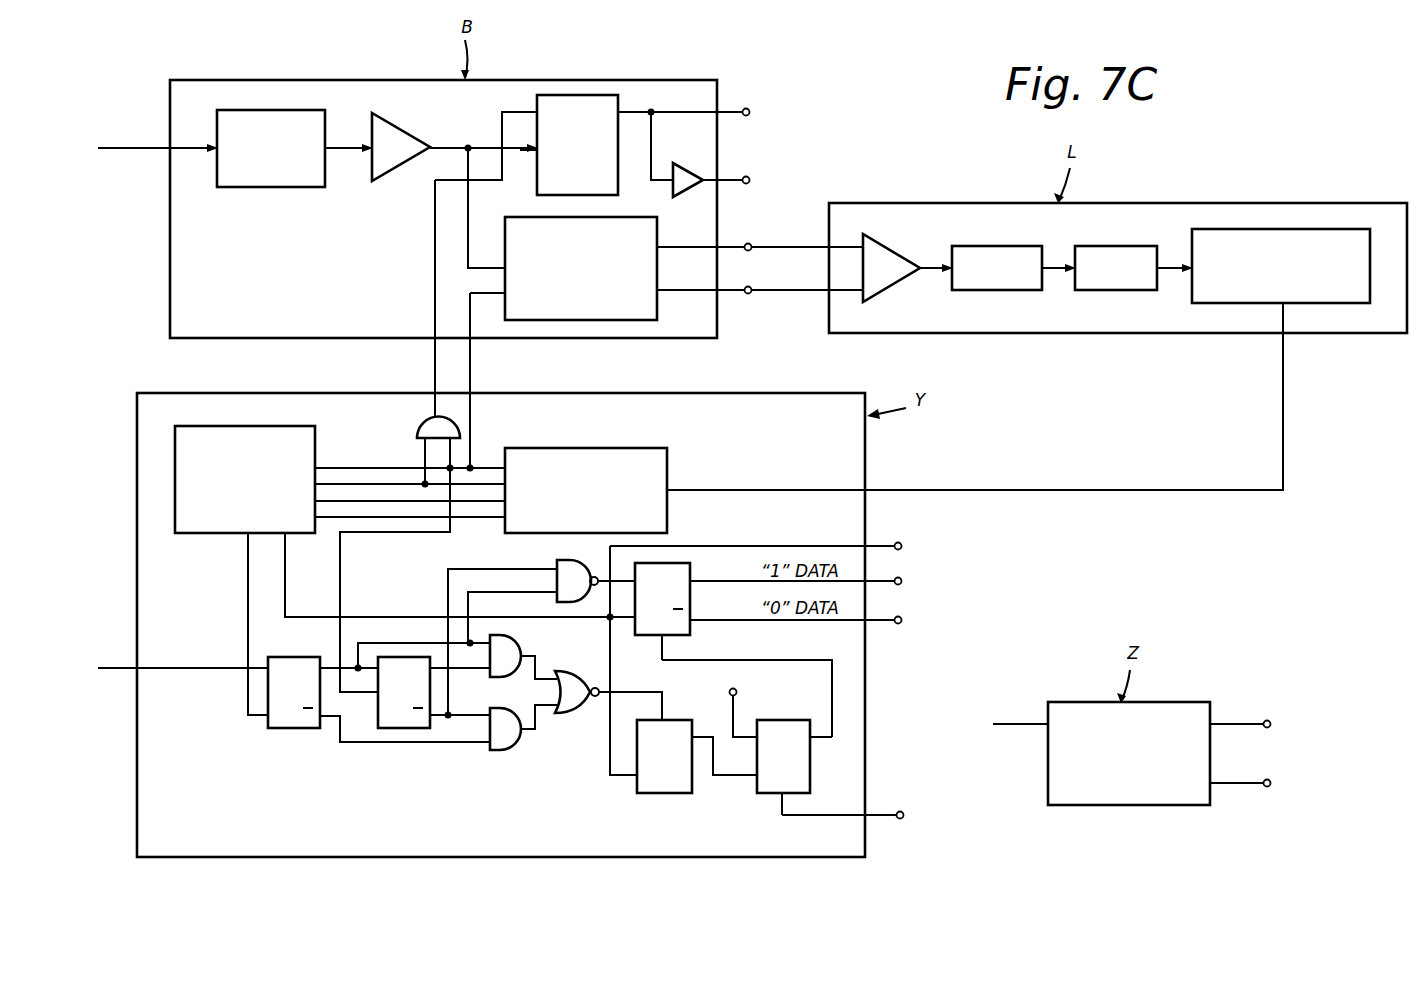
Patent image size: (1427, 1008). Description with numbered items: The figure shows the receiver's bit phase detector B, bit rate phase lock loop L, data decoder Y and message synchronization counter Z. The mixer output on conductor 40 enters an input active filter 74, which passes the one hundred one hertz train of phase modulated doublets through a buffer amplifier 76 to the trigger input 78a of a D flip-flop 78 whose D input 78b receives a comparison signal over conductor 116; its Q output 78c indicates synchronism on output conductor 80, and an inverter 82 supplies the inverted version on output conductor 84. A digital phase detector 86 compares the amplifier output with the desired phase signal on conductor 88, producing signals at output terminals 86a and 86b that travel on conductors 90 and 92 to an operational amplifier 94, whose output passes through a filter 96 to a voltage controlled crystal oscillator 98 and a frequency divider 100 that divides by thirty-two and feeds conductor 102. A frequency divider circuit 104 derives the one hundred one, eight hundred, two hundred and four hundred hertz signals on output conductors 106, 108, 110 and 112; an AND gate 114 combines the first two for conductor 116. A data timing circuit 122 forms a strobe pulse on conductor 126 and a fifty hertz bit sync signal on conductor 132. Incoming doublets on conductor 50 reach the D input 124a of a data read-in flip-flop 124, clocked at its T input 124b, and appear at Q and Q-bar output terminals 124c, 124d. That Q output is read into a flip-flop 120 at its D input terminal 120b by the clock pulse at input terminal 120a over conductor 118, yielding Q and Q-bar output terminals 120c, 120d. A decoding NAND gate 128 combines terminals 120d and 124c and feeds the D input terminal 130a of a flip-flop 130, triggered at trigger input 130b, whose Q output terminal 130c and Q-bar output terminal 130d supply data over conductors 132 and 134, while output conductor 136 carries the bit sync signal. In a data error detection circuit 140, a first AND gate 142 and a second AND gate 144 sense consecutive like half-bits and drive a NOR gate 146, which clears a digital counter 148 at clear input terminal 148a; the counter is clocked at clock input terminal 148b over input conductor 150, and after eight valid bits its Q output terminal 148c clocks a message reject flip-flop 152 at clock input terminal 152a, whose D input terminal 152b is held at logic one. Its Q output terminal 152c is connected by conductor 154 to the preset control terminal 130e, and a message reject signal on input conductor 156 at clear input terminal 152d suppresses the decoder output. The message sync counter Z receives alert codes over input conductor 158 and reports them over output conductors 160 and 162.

The conductor 40 is at (122, 147).
The conductor 50 is at (112, 667).
The input active filter 74 is at (260, 188).
The buffer amplifier 76 is at (396, 128).
The D flip-flop 78 is at (577, 94).
The T or trigger input 78a is at (530, 158).
The D input 78b is at (536, 108).
The Q output 78c is at (619, 107).
The output conductor 80 is at (734, 110).
The inverter 82 is at (700, 163).
The output conductor 84 is at (740, 178).
The digital phase detector 86 is at (580, 321).
The output terminal 86a is at (672, 246).
The output terminal 86b is at (661, 293).
The conductor 88 is at (471, 362).
The output conductor 90 is at (778, 246).
The conductor 92 is at (782, 293).
The operational amplifier 94 is at (888, 231).
The filter 96 is at (995, 246).
The voltage controlled crystal oscillator 98 is at (1112, 246).
The frequency divider 100 is at (1276, 229).
The conductor 102 is at (1151, 489).
The frequency divider circuit 104 is at (577, 448).
The output conductor 106 is at (491, 466).
The output conductor 108 is at (378, 483).
The output conductor 110 is at (471, 503).
The output conductor 112 is at (403, 518).
The AND gate 114 is at (419, 434).
The conductor 116 is at (435, 237).
The conductor 118 is at (341, 571).
The flip-flop 120 is at (405, 731).
The input terminal 120a is at (378, 696).
The D input terminal 120b is at (373, 650).
The Q output terminal 120c is at (434, 660).
The Q-bar output terminal 120d is at (436, 726).
The data timing circuit 122 is at (210, 536).
The data read-in flip-flop 124 is at (279, 740).
The D input 124a is at (265, 672).
The T input 124b is at (265, 719).
The Q output terminal 124c is at (330, 658).
The Q-bar output terminal 124d is at (329, 724).
The conductor 126 is at (248, 607).
The decoding NAND gate 128 is at (578, 560).
The flip-flop 130 is at (680, 563).
The D input terminal 130a is at (678, 545).
The trigger input 130b is at (632, 622).
The Q output terminal 130c is at (695, 580).
The Q-bar output terminal 130d is at (696, 617).
The preset control terminal 130e is at (665, 641).
The output conductor 132 is at (287, 569).
The output conductor 134 is at (882, 619).
The output conductor 136 is at (882, 545).
The data error detection circuit 140 is at (557, 775).
The first AND gate 142 is at (513, 637).
The second AND gate 144 is at (505, 752).
The NOR gate 146 is at (570, 673).
The digital counter 148 is at (665, 795).
The clear input terminal 148a is at (655, 713).
The clock input terminal 148b is at (633, 783).
The Q output terminal 148c is at (697, 734).
The input conductor 150 is at (608, 758).
The message reject flip-flop 152 is at (778, 720).
The clock input terminal 152a is at (755, 786).
The D input terminal 152b is at (753, 733).
The Q output terminal 152c is at (814, 740).
The clear input terminal 152d is at (786, 801).
The conductor 154 is at (833, 683).
The input conductor 156 is at (882, 821).
The input conductor 158 is at (1010, 724).
The output conductor 160 is at (1236, 724).
The output conductor 162 is at (1242, 784).